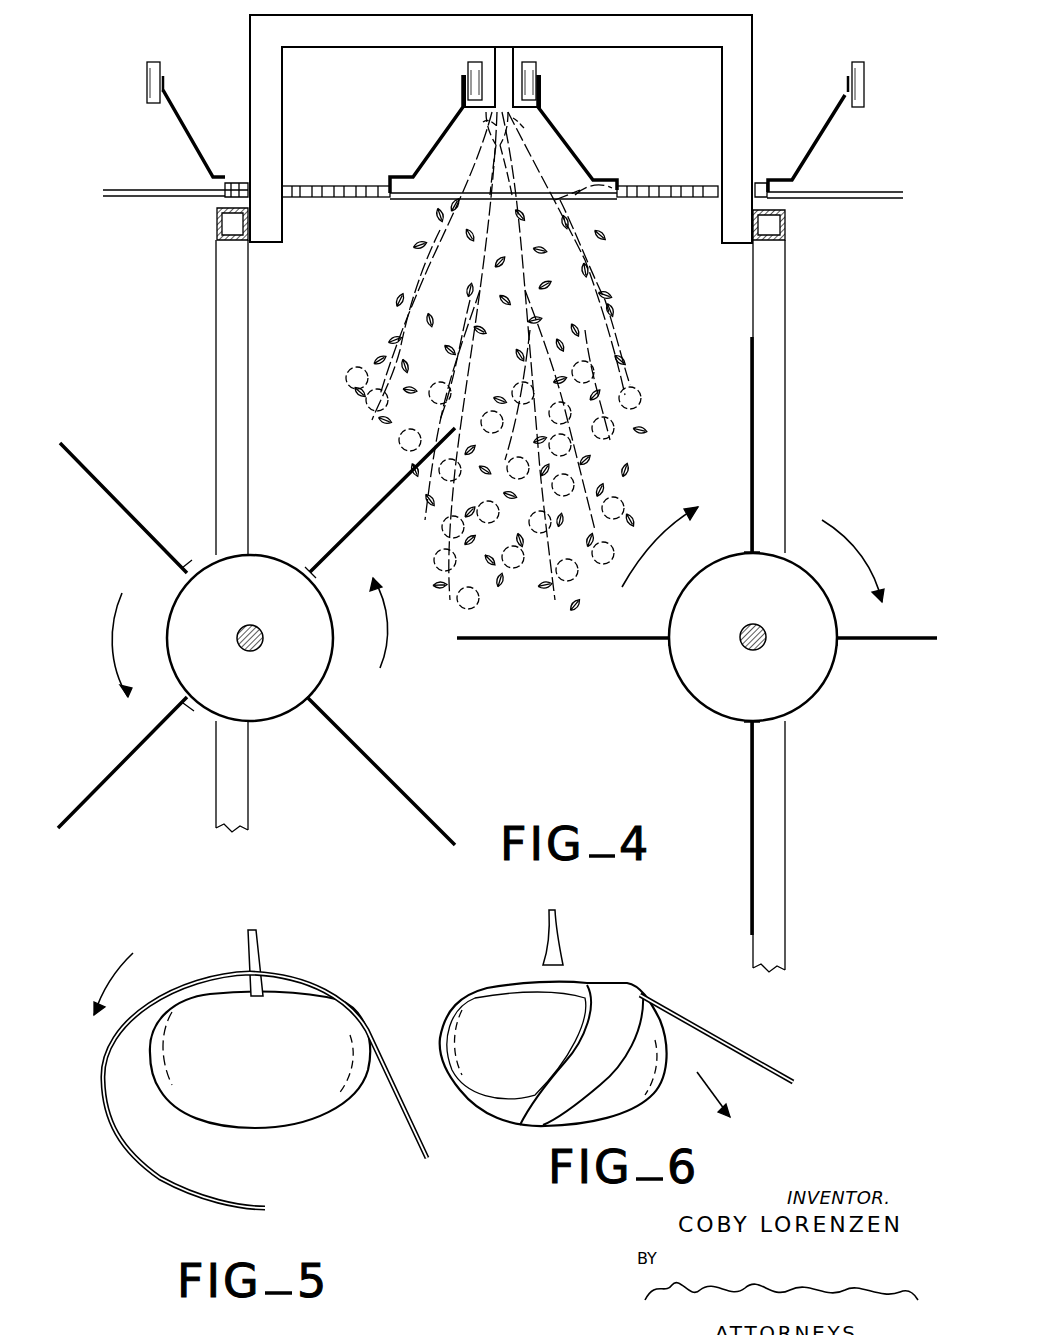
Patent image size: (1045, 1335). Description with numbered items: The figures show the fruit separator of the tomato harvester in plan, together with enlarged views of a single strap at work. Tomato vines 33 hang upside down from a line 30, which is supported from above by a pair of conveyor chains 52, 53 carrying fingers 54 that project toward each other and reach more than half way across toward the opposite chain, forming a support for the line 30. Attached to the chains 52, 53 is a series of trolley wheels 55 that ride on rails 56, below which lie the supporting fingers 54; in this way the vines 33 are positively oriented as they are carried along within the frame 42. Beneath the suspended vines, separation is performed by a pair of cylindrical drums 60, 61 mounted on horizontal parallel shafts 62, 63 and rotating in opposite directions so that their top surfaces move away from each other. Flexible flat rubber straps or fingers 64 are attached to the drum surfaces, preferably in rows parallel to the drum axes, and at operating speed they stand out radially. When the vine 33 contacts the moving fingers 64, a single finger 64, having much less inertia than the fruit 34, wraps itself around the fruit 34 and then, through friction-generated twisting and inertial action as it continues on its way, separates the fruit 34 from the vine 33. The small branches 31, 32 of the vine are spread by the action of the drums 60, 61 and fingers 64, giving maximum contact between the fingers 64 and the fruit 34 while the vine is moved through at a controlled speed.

In FIG. 4, the line 30 is at (498, 132).
In FIG. 4, the branch 31 is at (497, 123).
In FIG. 4, the branch 32 is at (513, 118).
In FIG. 4, the vine 33 is at (593, 320).
In FIG. 4, the fruit 34 is at (618, 428).
In FIG. 5, the fruit 34 is at (347, 1095).
In FIG. 6, the fruit 34 is at (640, 1087).
In FIG. 4, the frame 42 is at (745, 123).
In FIG. 4, the conveyor chain 52 is at (678, 183).
In FIG. 4, the conveyor chain 53 is at (332, 183).
In FIG. 4, the finger 54 is at (143, 188).
In FIG. 4, the trolley wheel 55 is at (468, 66).
In FIG. 4, the rail 56 is at (462, 107).
In FIG. 4, the cylindrical drum 60 is at (317, 668).
In FIG. 4, the cylindrical drum 61 is at (710, 693).
In FIG. 4, the shaft 62 is at (257, 625).
In FIG. 4, the shaft 63 is at (764, 625).
In FIG. 4, the flexible flat rubber strap or finger 64 is at (108, 488).
In FIG. 5, the flexible flat rubber strap or finger 64 is at (392, 1070).
In FIG. 6, the flexible flat rubber strap or finger 64 is at (772, 1062).